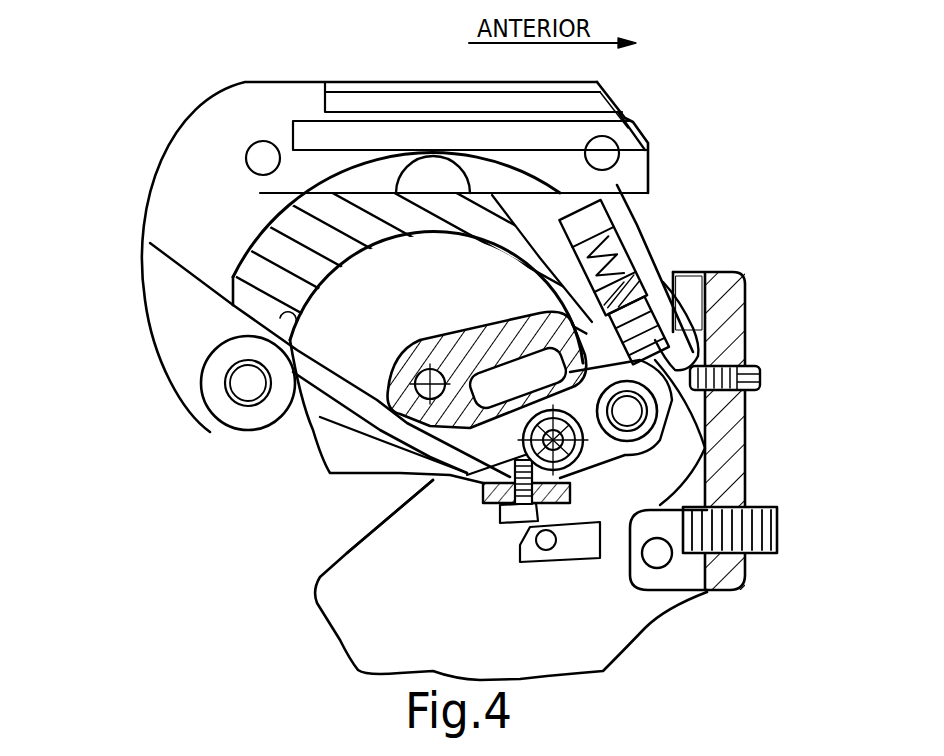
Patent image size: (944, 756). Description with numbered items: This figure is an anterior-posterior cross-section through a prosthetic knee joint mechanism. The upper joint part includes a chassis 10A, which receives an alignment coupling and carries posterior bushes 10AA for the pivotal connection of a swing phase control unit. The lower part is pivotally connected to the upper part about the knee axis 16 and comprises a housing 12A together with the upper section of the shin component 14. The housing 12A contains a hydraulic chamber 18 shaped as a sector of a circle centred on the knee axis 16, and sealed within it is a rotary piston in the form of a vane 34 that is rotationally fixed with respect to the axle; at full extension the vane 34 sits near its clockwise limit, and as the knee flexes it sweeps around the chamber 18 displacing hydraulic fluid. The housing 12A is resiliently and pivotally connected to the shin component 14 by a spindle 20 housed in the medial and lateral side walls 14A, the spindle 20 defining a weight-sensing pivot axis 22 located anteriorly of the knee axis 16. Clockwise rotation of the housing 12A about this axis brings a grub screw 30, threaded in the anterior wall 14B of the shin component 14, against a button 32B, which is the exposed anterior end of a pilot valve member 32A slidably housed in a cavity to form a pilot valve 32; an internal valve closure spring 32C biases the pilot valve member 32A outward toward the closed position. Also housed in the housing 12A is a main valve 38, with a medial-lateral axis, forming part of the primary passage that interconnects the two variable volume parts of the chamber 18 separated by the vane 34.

The chassis 10A is at (188, 139).
The posterior bushes 10AA is at (221, 407).
The housing 12A is at (693, 266).
The shin component 14 is at (316, 627).
The side walls 14A is at (353, 558).
The anterior wall 14B is at (730, 299).
The knee axis 16 is at (327, 433).
The hydraulic chamber 18 is at (418, 297).
The spindle 20 is at (472, 485).
The weight-sensing pivot axis 22 is at (562, 482).
The grub screw 30 is at (762, 360).
The pilot valve 32 is at (650, 220).
The pilot valve member 32A is at (668, 290).
The button 32B is at (705, 452).
The valve closure spring 32C is at (638, 142).
The vane 34 is at (493, 330).
The main valve 38 is at (630, 444).